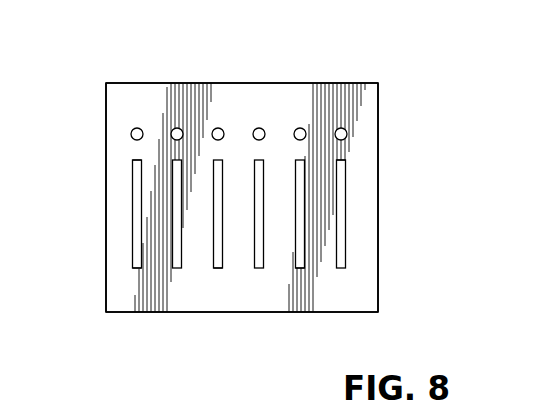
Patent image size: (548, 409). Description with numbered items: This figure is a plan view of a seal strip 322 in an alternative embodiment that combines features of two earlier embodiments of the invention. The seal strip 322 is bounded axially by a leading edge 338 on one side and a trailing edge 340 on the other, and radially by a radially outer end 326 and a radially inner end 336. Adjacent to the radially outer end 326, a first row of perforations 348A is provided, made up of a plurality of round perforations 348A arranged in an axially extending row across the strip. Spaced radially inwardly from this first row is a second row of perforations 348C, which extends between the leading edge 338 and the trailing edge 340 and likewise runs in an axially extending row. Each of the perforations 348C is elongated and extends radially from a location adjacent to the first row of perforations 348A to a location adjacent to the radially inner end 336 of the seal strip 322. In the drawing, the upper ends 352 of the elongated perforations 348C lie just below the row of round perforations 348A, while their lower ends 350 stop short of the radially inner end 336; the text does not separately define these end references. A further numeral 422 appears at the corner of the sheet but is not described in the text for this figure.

The seal strip 322 is at (384, 85).
The radially outer end 326 is at (224, 83).
The radially inner end 336 is at (186, 313).
The leading edge 338 is at (106, 243).
The trailing edge 340 is at (378, 290).
The first row of perforations 348A is at (136, 127).
The second row of perforations 348C is at (131, 195).
The slot lower ends 350 is at (140, 270).
The slot upper ends 352 is at (133, 160).
The adjacent figure reference 422 is at (30, 407).